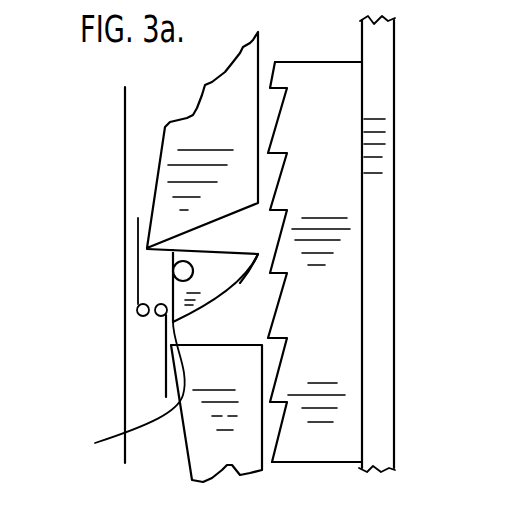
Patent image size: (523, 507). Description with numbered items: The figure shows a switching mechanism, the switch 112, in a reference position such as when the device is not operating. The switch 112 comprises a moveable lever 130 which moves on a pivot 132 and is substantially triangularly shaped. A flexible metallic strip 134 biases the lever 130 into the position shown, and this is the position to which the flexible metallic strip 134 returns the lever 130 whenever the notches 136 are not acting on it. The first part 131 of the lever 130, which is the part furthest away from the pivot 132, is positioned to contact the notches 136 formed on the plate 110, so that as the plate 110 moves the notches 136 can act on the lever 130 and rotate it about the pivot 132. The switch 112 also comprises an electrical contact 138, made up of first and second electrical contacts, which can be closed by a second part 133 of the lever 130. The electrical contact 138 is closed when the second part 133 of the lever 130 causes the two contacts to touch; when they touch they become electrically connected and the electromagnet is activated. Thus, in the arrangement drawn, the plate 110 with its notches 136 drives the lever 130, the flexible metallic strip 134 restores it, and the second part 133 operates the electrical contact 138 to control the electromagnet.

The plate 110 is at (396, 94).
The notches 136 is at (289, 190).
The flexible metallic strip 134 is at (207, 248).
The electrical contact 138 is at (125, 310).
The switch 112 is at (104, 293).
The pivot 132 is at (181, 261).
The moveable lever 130 is at (181, 312).
The first part of lever 131 is at (253, 267).
The second part of lever 133 is at (117, 394).